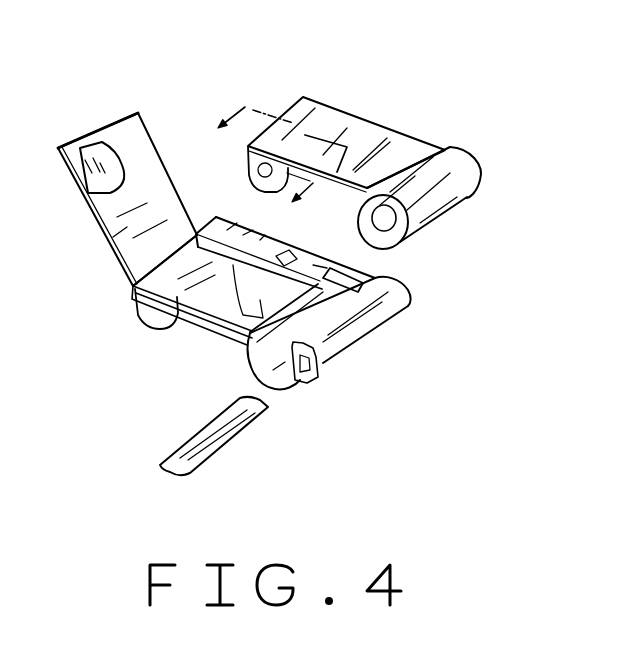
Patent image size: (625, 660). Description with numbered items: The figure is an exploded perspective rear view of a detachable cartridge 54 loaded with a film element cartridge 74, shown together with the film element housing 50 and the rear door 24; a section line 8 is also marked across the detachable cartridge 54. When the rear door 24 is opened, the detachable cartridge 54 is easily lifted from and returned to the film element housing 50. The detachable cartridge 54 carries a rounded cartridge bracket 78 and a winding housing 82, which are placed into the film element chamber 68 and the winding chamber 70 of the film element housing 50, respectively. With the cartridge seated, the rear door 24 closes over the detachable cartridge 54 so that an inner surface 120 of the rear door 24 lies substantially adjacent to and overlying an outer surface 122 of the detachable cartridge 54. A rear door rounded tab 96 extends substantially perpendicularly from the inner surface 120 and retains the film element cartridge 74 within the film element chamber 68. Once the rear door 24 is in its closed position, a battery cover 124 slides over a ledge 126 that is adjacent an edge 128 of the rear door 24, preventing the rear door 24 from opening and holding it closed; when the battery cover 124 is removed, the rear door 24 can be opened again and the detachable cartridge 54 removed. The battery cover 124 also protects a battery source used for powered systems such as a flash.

The section line 8- 8 is at (272, 169).
The rear door 24 is at (137, 133).
The film element housing 50 is at (205, 332).
The detachable cartridge 54 is at (367, 164).
The film element chamber 68 is at (312, 312).
The winding chamber 70 is at (133, 286).
The film element cartridge 74 is at (393, 237).
The rounded cartridge bracket 78 is at (452, 188).
The winding housing 82 is at (265, 187).
The rear door rounded tab 96 is at (80, 147).
The inner surface 120 is at (113, 238).
The outer surface 122 is at (322, 123).
The battery cover 124 is at (230, 438).
The ledge 126 is at (380, 312).
The edge 128 is at (112, 118).